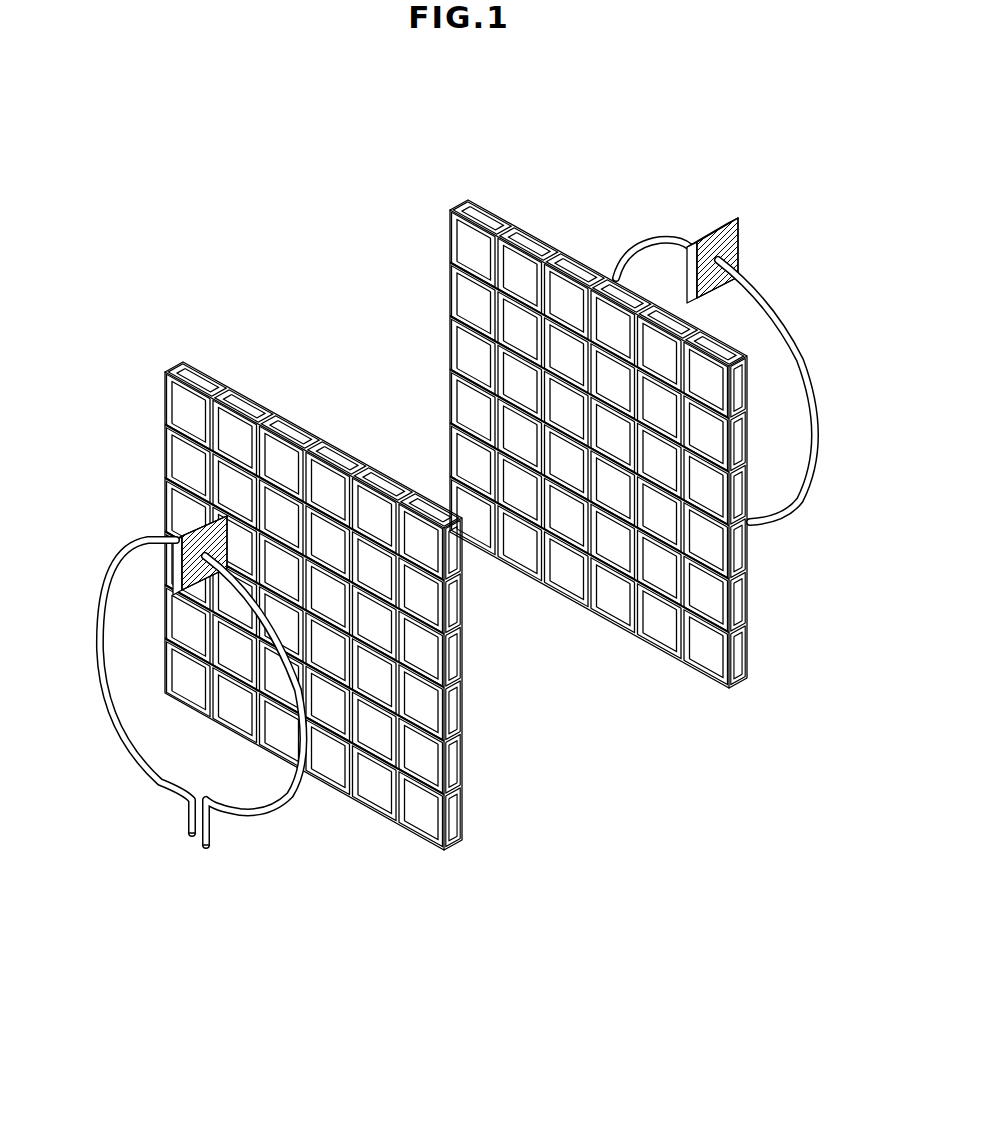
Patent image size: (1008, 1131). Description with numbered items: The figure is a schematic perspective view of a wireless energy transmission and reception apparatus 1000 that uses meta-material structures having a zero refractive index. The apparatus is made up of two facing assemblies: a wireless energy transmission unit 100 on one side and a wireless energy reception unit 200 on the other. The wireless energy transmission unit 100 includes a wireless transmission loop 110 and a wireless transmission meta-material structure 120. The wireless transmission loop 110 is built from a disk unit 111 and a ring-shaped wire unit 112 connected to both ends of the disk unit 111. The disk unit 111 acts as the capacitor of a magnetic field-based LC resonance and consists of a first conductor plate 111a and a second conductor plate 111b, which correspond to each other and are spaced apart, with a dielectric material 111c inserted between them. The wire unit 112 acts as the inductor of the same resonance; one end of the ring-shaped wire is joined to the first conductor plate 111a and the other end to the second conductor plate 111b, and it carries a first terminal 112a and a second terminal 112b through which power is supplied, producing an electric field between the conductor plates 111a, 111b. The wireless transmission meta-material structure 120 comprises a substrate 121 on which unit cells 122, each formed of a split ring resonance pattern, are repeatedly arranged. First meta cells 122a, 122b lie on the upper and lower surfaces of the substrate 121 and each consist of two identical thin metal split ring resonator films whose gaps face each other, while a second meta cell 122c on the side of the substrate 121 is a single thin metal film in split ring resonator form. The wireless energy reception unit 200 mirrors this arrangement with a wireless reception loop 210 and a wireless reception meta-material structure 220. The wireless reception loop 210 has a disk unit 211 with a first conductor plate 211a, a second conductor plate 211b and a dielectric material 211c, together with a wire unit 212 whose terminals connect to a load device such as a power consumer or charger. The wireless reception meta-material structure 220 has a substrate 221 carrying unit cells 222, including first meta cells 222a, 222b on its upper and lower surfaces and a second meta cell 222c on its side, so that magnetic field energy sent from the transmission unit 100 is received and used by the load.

The display apparatus 1000 is at (338, 106).
The wireless energy transmission unit 100 is at (345, 928).
The wireless transmission loop 110 is at (270, 831).
The disk unit 111 is at (96, 470).
The first conductor plate 111a is at (175, 545).
The second conductor plate 111b is at (186, 532).
The dielectric material 111c is at (200, 560).
The wire unit 112 is at (162, 770).
The first terminal 112a is at (190, 820).
The second terminal 112b is at (205, 830).
The wireless transmission meta-material structure 120 is at (381, 841).
The substrate 121 is at (457, 845).
The unit cell 122 is at (548, 722).
The first meta cell 122a is at (447, 737).
The first meta cell 122b is at (447, 773).
The second meta cell 122c is at (460, 810).
The wireless energy reception unit 200 is at (670, 123).
The wireless reception loop 210 is at (672, 214).
The disk unit 211 is at (828, 208).
The first conductor plate 211a is at (722, 250).
The second conductor plate 211b is at (715, 235).
The dielectric material 211c is at (712, 236).
The wire unit 212 is at (768, 300).
The wireless reception meta-material structure 220 is at (532, 196).
The substrate 221 is at (742, 680).
The unit cell 222 is at (835, 555).
The first meta cell 222a is at (736, 572).
The first meta cell 222b is at (736, 605).
The second meta cell 222c is at (736, 652).